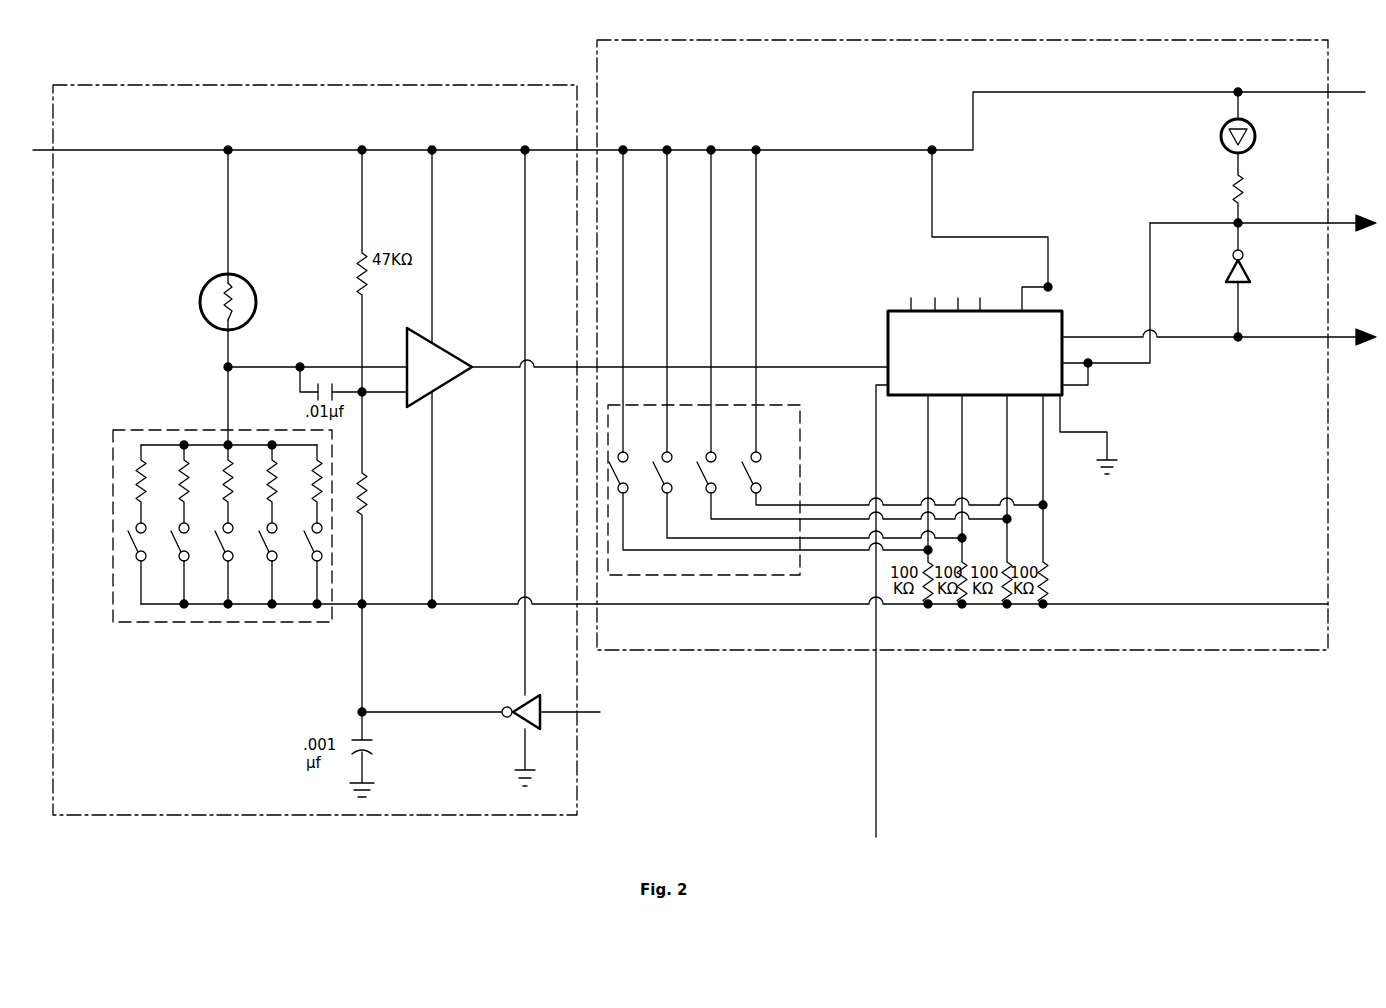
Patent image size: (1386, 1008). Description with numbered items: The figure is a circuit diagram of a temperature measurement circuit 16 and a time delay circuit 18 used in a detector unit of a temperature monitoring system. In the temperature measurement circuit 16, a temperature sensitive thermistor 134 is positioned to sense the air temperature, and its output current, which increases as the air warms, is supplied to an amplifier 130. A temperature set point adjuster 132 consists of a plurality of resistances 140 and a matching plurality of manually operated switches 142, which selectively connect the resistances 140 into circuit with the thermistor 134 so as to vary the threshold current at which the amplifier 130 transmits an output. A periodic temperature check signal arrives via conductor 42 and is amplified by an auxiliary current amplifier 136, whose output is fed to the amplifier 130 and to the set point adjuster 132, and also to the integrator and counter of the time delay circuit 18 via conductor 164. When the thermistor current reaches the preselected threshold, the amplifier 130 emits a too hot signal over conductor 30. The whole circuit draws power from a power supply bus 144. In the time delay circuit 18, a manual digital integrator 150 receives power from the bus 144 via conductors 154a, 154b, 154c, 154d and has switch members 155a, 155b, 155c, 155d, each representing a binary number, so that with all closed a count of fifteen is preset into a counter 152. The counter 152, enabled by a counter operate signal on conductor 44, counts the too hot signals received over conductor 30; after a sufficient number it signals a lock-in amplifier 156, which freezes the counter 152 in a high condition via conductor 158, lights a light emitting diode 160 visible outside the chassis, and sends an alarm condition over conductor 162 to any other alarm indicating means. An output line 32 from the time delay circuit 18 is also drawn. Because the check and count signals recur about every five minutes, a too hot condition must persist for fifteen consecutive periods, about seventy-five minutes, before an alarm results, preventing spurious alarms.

The temperature measurement circuit 16 is at (582, 780).
The time delay circuit 18 is at (974, 650).
The conductor 30 is at (546, 368).
The time delay output line 32 is at (1338, 316).
The conductor 42 is at (586, 714).
The conductor 44 is at (878, 768).
The amplifier 130 is at (448, 374).
The temperature set point adjuster 132 is at (231, 494).
The thermistor 134 is at (212, 288).
The current amplifier 136 is at (508, 748).
The resistances 140 is at (316, 472).
The switches 142 is at (323, 557).
The power supply bus 144 is at (238, 146).
The manual digital integrator 150 is at (790, 416).
The counter 152 is at (888, 306).
The conductor 154a is at (796, 262).
The conductor 154b is at (750, 262).
The conductor 154c is at (704, 262).
The conductor 154d is at (660, 262).
The switch member 155a is at (762, 490).
The switch member 155b is at (716, 492).
The switch member 155c is at (672, 492).
The switch member 155d is at (628, 492).
The lock-in amplifier 156 is at (1250, 284).
The conductor 158 is at (1128, 362).
The light emitting diode 160 is at (1224, 152).
The conductor 162 is at (1334, 198).
The conductor 164 is at (580, 624).